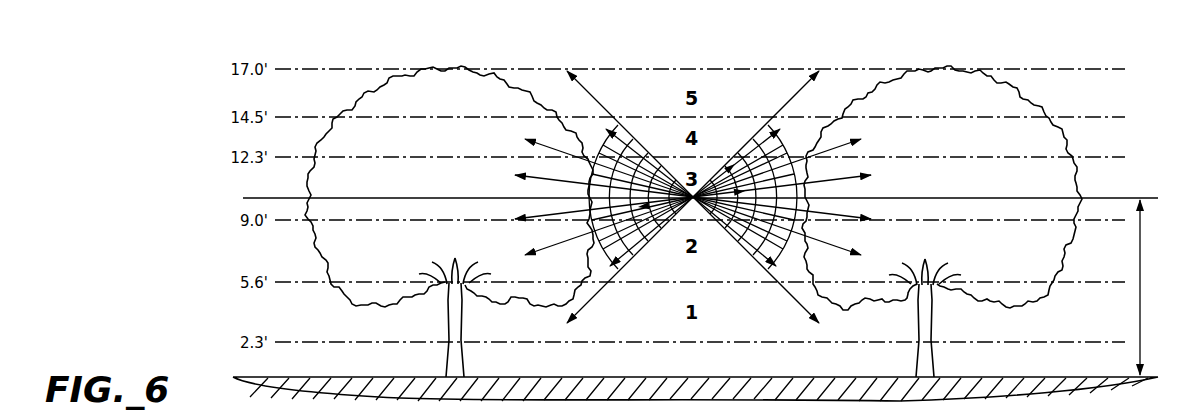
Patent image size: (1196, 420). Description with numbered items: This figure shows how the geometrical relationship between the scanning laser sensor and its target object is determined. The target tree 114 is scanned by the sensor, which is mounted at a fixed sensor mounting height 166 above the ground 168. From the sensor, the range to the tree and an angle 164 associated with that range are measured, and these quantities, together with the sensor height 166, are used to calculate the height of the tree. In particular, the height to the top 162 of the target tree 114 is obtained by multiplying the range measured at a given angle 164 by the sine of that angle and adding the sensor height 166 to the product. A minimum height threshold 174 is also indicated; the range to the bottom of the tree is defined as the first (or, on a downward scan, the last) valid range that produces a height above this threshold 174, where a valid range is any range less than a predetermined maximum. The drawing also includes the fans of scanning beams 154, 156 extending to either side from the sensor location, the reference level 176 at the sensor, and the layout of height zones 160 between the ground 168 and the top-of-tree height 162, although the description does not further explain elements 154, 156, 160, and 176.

The target tree 114 is at (348, 107).
The left-side scanning laser beams 154 is at (594, 143).
The right-side scanning laser beams 156 is at (772, 124).
The scan height zones 160 is at (1133, 94).
The height to the top of the target tree 162 is at (348, 68).
The angle 164 is at (736, 160).
The sensor mounting height 166 is at (1140, 292).
The ground 168 is at (655, 376).
The minimum height threshold 174 is at (237, 330).
The sensor horizontal reference plane 176 is at (249, 197).